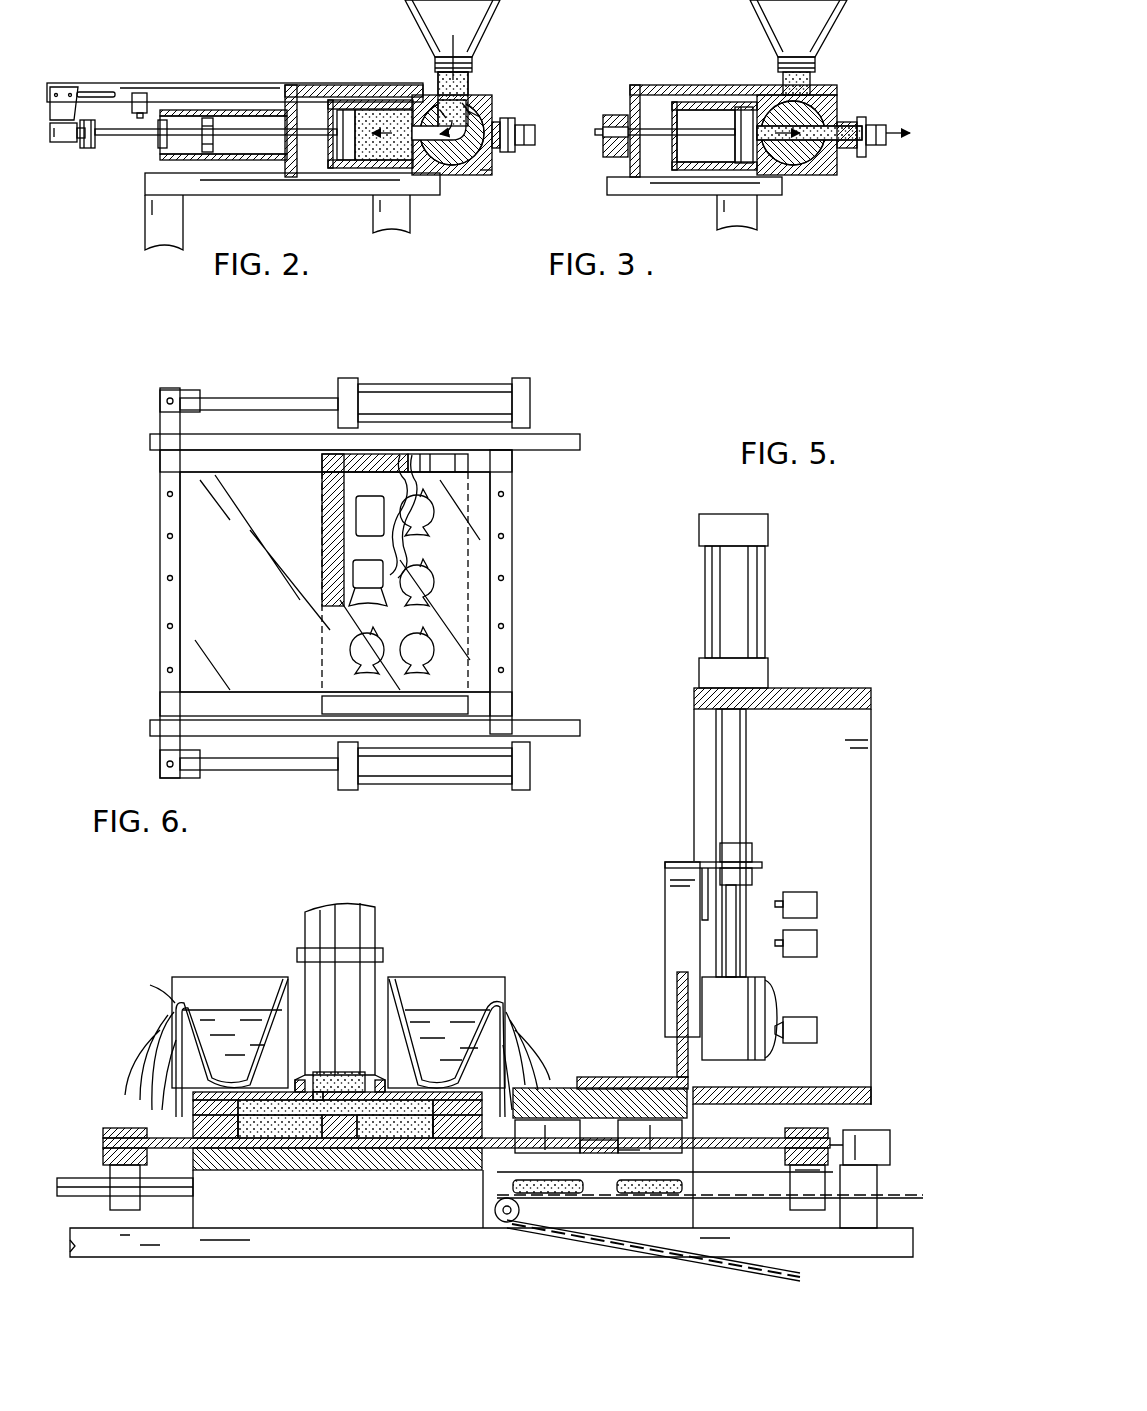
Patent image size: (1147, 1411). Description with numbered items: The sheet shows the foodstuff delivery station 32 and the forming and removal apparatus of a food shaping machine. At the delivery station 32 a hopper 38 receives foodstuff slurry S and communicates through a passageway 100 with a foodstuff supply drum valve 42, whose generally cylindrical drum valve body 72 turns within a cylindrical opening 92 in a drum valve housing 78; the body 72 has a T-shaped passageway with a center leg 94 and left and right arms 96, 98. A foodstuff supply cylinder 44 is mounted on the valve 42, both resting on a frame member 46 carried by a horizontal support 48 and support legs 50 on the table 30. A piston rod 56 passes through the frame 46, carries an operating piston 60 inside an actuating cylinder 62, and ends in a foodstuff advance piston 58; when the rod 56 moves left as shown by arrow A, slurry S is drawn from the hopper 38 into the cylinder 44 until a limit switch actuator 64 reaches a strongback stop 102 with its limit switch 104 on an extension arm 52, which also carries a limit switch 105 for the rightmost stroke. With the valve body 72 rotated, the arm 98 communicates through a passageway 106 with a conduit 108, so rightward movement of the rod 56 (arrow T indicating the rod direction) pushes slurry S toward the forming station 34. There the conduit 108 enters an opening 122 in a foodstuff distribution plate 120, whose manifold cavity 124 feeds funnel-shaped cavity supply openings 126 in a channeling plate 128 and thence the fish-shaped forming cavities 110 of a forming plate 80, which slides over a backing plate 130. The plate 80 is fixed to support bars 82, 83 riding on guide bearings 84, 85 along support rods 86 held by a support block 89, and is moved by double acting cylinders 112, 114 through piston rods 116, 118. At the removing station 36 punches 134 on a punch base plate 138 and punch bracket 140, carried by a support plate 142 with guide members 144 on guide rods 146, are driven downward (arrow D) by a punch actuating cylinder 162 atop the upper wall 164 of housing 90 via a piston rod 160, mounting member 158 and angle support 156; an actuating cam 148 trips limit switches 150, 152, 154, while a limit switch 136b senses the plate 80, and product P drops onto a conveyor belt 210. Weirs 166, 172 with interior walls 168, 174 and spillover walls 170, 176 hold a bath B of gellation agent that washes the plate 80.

In FIG. 5, the table 30 is at (210, 1245).
In FIG. 2, the foodstuff delivery station 32 is at (505, 45).
In FIG. 3, the foodstuff delivery station 32 is at (862, 52).
In FIG. 6, the forming station 34 is at (523, 372).
In FIG. 5, the forming station 34 is at (410, 940).
In FIG. 5, the removing station 36 is at (632, 945).
In FIG. 2, the hopper 38 is at (425, 12).
In FIG. 3, the hopper 38 is at (755, 12).
In FIG. 2, the foodstuff supply drum valve 42 is at (494, 165).
In FIG. 3, the foodstuff supply drum valve 42 is at (838, 175).
In FIG. 2, the foodstuff supply cylinder 44 is at (342, 170).
In FIG. 3, the foodstuff supply cylinder 44 is at (676, 102).
In FIG. 2, the frame member 46 is at (302, 85).
In FIG. 3, the frame member 46 is at (636, 85).
In FIG. 2, the horizontal support 48 is at (196, 190).
In FIG. 3, the horizontal support 48 is at (620, 195).
In FIG. 2, the support legs 50 is at (148, 222).
In FIG. 3, the support legs 50 is at (735, 228).
In FIG. 2, the extension arm 52 is at (240, 92).
In FIG. 2, the piston rod 56 is at (120, 129).
In FIG. 3, the piston rod 56 is at (598, 135).
In FIG. 2, the foodstuff advance piston 58 is at (345, 110).
In FIG. 3, the foodstuff advance piston 58 is at (740, 110).
In FIG. 2, the operating piston 60 is at (208, 118).
In FIG. 2, the actuating cylinder 62 is at (178, 110).
In FIG. 3, the actuating cylinder 62 is at (612, 115).
In FIG. 2, the limit switch actuator 64 is at (88, 148).
In FIG. 2, the drum valve body 72 is at (480, 117).
In FIG. 3, the drum valve body 72 is at (815, 110).
In FIG. 2, the drum valve housing 78 is at (480, 170).
In FIG. 6, the forming plate 80 is at (185, 560).
In FIG. 5, the forming plate 80 is at (745, 1145).
In FIG. 6, the support bar 82 is at (162, 706).
In FIG. 6, the support bar 83 is at (505, 708).
In FIG. 5, the support bar 83 is at (785, 1160).
In FIG. 5, the guide bearing 84 is at (128, 1210).
In FIG. 5, the guide bearing 85 is at (800, 1180).
In FIG. 6, the support rods 86 is at (572, 436).
In FIG. 5, the support rods 86 is at (700, 1185).
In FIG. 5, the support block 89 is at (858, 1220).
In FIG. 5, the housing 90 is at (880, 790).
In FIG. 2, the cylindrical opening 92 is at (430, 165).
In FIG. 3, the cylindrical opening 92 is at (775, 175).
In FIG. 2, the center leg 94 is at (438, 160).
In FIG. 3, the center leg 94 is at (800, 165).
In FIG. 2, the left arm 96 is at (440, 110).
In FIG. 3, the left arm 96 is at (772, 110).
In FIG. 2, the right arm 98 is at (447, 158).
In FIG. 3, the right arm 98 is at (830, 115).
In FIG. 2, the passageway 100 is at (465, 103).
In FIG. 2, the strongback stop 102 is at (68, 87).
In FIG. 2, the limit switch 104 is at (60, 142).
In FIG. 2, the limit switch 105 is at (139, 93).
In FIG. 3, the passageway 106 is at (862, 120).
In FIG. 2, the conduit 108 is at (527, 127).
In FIG. 3, the conduit 108 is at (880, 128).
In FIG. 5, the conduit 108 is at (360, 912).
In FIG. 6, the forming cavities 110 is at (425, 570).
In FIG. 5, the forming cavities 110 is at (482, 1150).
In FIG. 6, the double acting cylinder 112 is at (460, 772).
In FIG. 6, the double acting cylinder 114 is at (440, 384).
In FIG. 6, the piston rod 116 is at (290, 770).
In FIG. 6, the piston rod 118 is at (280, 398).
In FIG. 6, the foodstuff distribution plate 120 is at (330, 582).
In FIG. 5, the opening 122 is at (316, 1095).
In FIG. 6, the foodstuff distribution manifold cavity 124 is at (348, 484).
In FIG. 5, the foodstuff distribution manifold cavity 124 is at (263, 1095).
In FIG. 6, the cavity supply openings 126 is at (356, 514).
In FIG. 5, the cavity supply openings 126 is at (410, 1140).
In FIG. 6, the foodstuff channeling plate 128 is at (352, 540).
In FIG. 5, the foodstuff channeling plate 128 is at (245, 1140).
In FIG. 5, the backing plate 130 is at (212, 1170).
In FIG. 5, the punches 134 is at (665, 1138).
In FIG. 5, the limit switch 136b is at (875, 1145).
In FIG. 5, the punch base plate 138 is at (597, 1105).
In FIG. 5, the punch bracket 140 is at (670, 1075).
In FIG. 5, the support plate 142 is at (670, 865).
In FIG. 5, the guide member 144 is at (765, 1050).
In FIG. 5, the guide rod 146 is at (737, 918).
In FIG. 5, the actuating cam 148 is at (777, 1008).
In FIG. 5, the limit switch 150 is at (818, 1030).
In FIG. 5, the limit switch 152 is at (815, 940).
In FIG. 5, the limit switch 154 is at (810, 895).
In FIG. 5, the angle support 156 is at (760, 865).
In FIG. 5, the mounting member 158 is at (752, 845).
In FIG. 5, the piston rod 160 is at (740, 770).
In FIG. 5, the punch actuating cylinder 162 is at (765, 600).
In FIG. 5, the upper wall 164 is at (845, 690).
In FIG. 5, the weir 166 is at (193, 975).
In FIG. 5, the interior wall 168 is at (262, 1000).
In FIG. 5, the spillover wall 170 is at (150, 985).
In FIG. 5, the weir 172 is at (493, 975).
In FIG. 5, the interior wall 174 is at (398, 1002).
In FIG. 5, the spillover wall 176 is at (505, 1003).
In FIG. 5, the conveyor belt 210 is at (770, 1262).
In FIG. 2, the directional arrow A is at (138, 150).
In FIG. 5, the bath B is at (232, 1010).
In FIG. 5, the direction arrow D is at (763, 782).
In FIG. 5, the product P is at (580, 1193).
In FIG. 2, the foodstuff slurry S is at (373, 112).
In FIG. 5, the foodstuff slurry S is at (352, 1082).
In FIG. 3, the direction arrow T is at (592, 133).